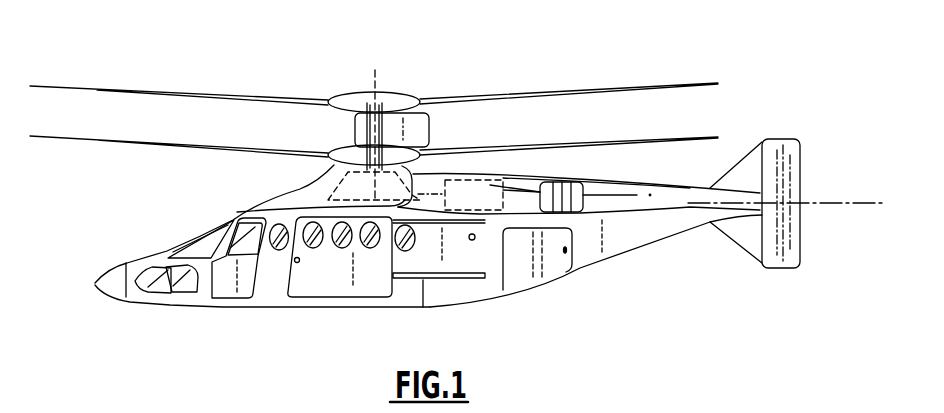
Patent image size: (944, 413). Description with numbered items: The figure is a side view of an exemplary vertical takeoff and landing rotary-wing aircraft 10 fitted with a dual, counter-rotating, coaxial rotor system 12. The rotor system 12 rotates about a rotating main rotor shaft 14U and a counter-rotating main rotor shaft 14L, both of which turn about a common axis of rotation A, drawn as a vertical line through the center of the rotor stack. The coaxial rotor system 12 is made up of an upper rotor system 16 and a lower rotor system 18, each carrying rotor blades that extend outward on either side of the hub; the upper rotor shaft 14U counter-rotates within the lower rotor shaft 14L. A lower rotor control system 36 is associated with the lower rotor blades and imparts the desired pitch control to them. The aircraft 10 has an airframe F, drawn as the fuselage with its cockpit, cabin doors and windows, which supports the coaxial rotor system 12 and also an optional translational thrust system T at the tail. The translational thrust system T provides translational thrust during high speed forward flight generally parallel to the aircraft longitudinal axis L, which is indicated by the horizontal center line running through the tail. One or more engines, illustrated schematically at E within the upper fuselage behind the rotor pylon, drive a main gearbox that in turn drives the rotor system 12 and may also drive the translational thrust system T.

The rotary-wing aircraft 10 is at (484, 56).
The dual, counter-rotating, coaxial rotor system 12 is at (407, 89).
The rotating main rotor shaft 14U is at (384, 130).
The counter-rotating main rotor shaft 14L is at (374, 146).
The upper rotor system 16 is at (421, 96).
The lower rotor system 18 is at (324, 165).
The lower rotor control system 36 is at (321, 112).
The axis of rotation A is at (377, 80).
The translational thrust system T is at (791, 124).
The aircraft longitudinal axis L is at (828, 204).
The engine E is at (500, 194).
The airframe F is at (342, 279).